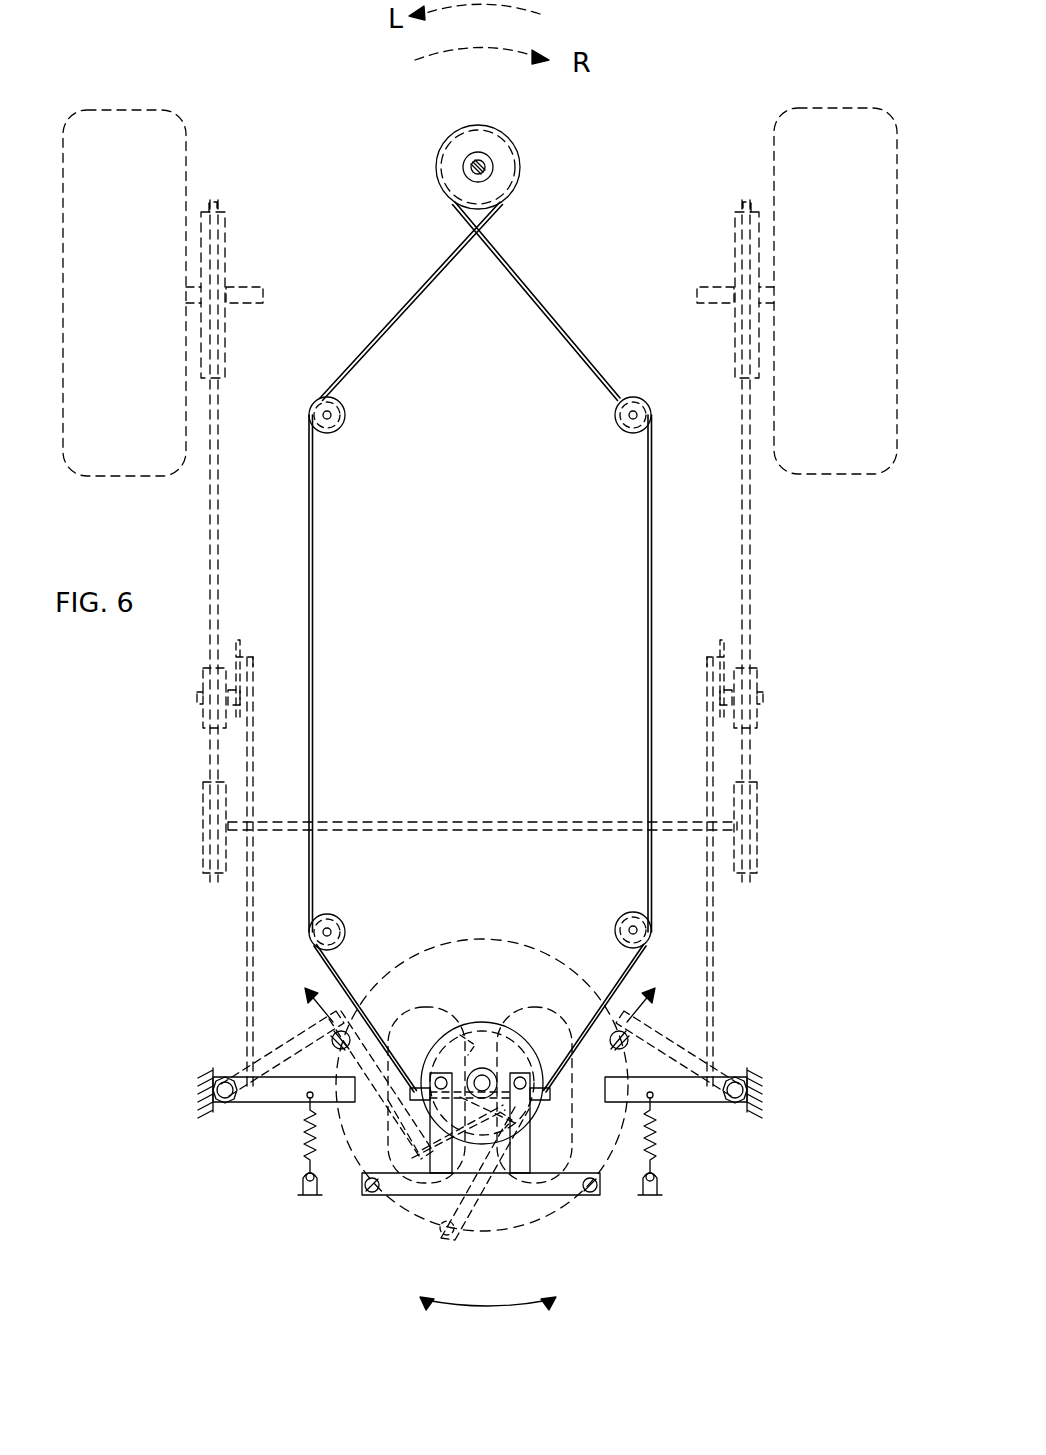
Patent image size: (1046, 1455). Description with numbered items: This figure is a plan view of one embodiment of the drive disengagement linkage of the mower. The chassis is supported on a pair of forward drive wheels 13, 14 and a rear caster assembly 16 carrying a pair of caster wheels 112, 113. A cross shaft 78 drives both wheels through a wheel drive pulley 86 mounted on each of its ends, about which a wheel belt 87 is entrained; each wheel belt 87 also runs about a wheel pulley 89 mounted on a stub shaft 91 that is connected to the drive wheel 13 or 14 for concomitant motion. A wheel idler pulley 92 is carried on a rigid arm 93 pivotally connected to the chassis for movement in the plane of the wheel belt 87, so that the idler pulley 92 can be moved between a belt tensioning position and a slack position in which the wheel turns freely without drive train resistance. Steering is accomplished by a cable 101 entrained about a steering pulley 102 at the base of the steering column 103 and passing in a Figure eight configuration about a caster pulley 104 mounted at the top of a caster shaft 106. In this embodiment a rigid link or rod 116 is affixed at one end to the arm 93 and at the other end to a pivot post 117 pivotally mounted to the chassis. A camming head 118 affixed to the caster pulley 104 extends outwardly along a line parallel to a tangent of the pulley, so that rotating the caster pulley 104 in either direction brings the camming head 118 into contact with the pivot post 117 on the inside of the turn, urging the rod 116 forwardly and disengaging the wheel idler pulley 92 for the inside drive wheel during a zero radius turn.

The forward drive wheel 13 is at (836, 125).
The forward drive wheel 14 is at (140, 128).
The rear caster assembly 16 is at (345, 1206).
The cross shaft 78 is at (497, 832).
The wheel drive pulley 86 is at (205, 862).
The wheel belt 87 is at (208, 548).
The wheel pulley 89 is at (226, 245).
The stub shaft 91 is at (255, 290).
The wheel idler pulley 92 is at (200, 680).
The rigid arm 93 is at (242, 642).
The cable 101 is at (454, 248).
The steering pulley 102 is at (462, 150).
The steering column 103 is at (493, 167).
The caster pulley 104 is at (478, 1022).
The caster shaft 106 is at (482, 1070).
The caster wheel 112 is at (540, 1020).
The caster wheel 113 is at (418, 1010).
The rigid link or rod 116 is at (252, 757).
The pivot post 117 is at (278, 1090).
The camming head 118 is at (412, 1218).